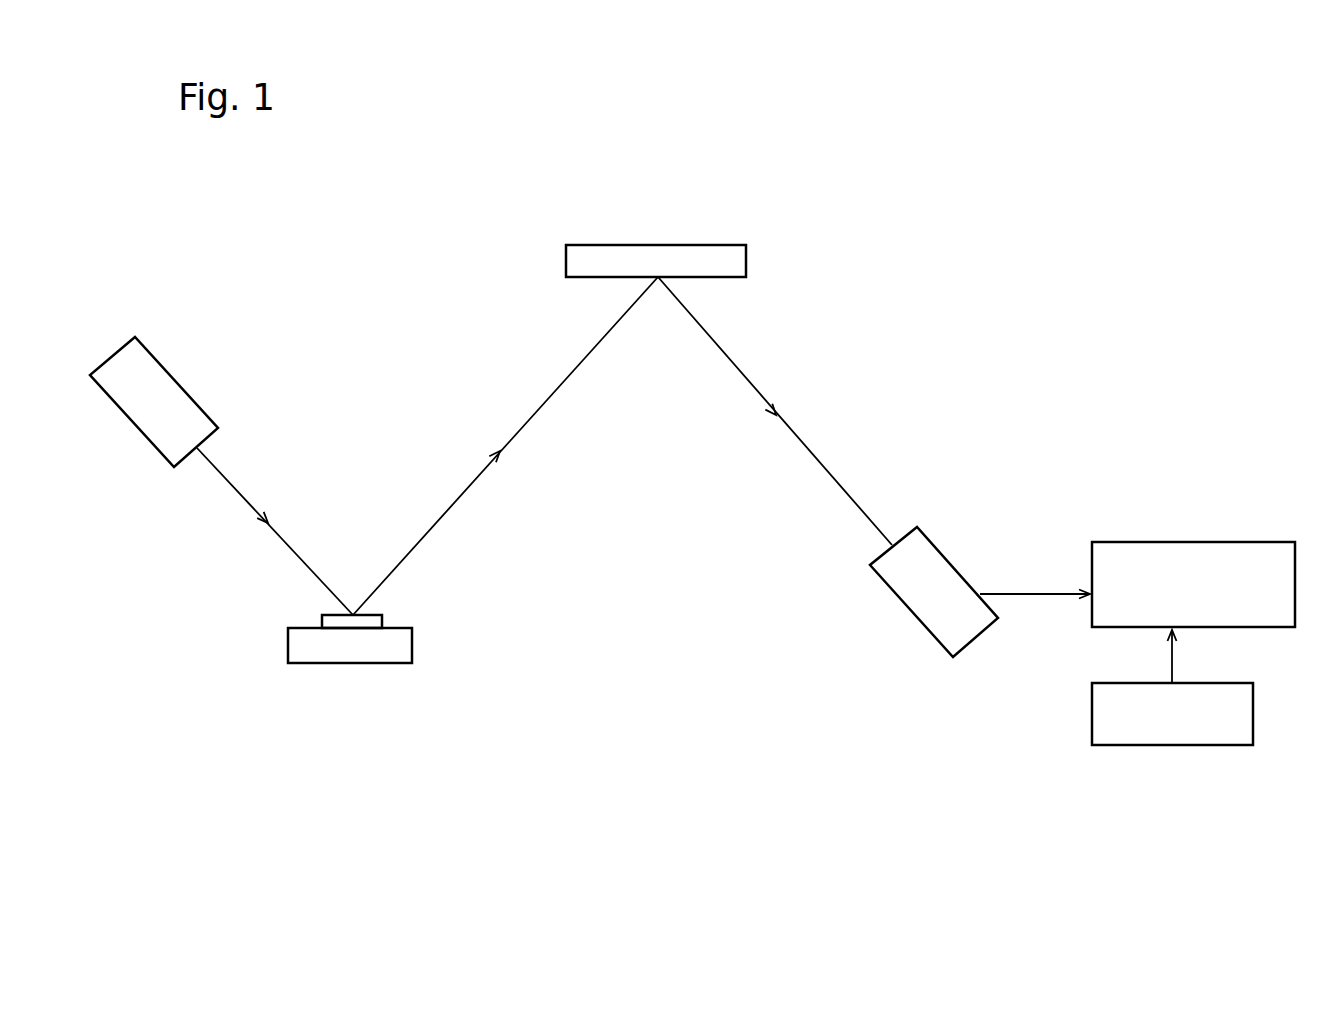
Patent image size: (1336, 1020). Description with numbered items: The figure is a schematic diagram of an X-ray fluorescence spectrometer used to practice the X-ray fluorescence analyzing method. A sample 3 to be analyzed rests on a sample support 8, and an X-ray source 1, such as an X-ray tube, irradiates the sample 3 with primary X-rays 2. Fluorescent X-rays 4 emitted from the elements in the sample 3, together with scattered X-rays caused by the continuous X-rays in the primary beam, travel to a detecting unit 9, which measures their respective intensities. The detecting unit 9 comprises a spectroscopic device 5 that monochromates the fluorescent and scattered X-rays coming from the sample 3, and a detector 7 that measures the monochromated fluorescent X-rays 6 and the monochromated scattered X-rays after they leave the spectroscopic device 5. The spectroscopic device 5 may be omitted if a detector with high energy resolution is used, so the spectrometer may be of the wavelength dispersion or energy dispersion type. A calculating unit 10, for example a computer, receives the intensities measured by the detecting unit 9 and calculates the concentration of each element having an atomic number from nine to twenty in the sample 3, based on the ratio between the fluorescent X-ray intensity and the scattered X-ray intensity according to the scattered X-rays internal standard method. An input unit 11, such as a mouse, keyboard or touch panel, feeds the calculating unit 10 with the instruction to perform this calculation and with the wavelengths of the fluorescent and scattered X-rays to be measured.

The X-ray source 1 is at (162, 362).
The primary X-rays 2 is at (223, 472).
The sample 3 is at (382, 620).
The fluorescent X-rays 4 is at (540, 408).
The spectroscopic device 5 is at (746, 260).
The fluorescent X-rays 6 is at (820, 460).
The detector 7 is at (953, 562).
The sample support 8 is at (412, 645).
The detecting unit 9 is at (900, 648).
The calculating unit 10 is at (1175, 542).
The input unit 11 is at (1170, 745).